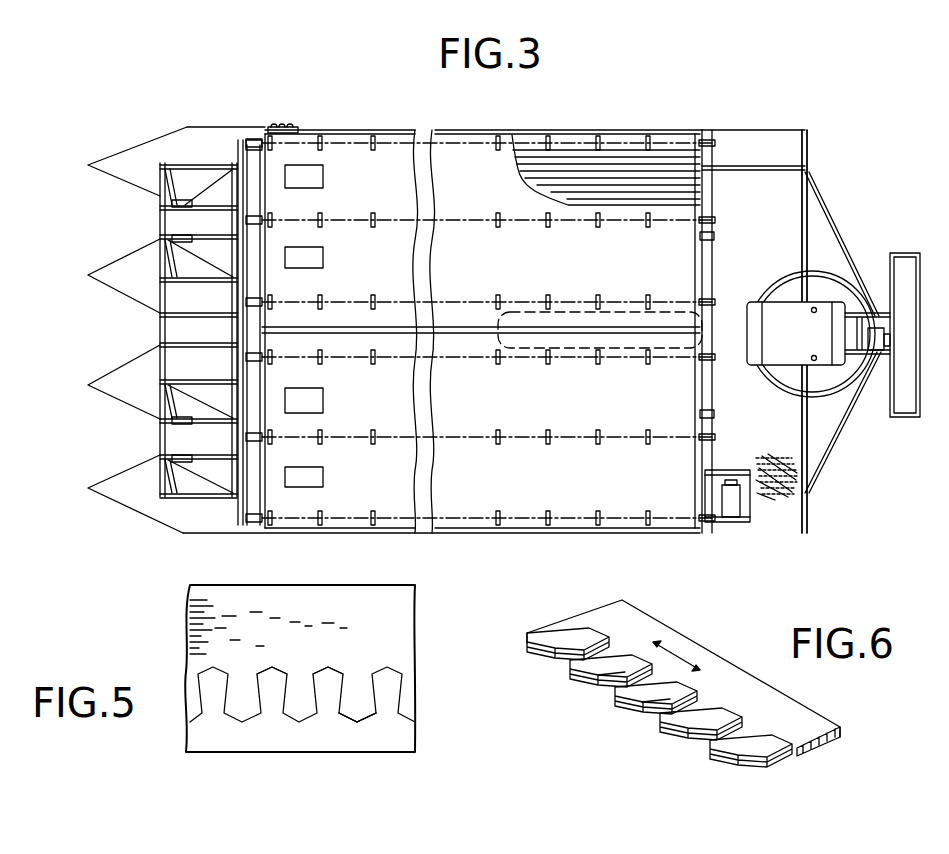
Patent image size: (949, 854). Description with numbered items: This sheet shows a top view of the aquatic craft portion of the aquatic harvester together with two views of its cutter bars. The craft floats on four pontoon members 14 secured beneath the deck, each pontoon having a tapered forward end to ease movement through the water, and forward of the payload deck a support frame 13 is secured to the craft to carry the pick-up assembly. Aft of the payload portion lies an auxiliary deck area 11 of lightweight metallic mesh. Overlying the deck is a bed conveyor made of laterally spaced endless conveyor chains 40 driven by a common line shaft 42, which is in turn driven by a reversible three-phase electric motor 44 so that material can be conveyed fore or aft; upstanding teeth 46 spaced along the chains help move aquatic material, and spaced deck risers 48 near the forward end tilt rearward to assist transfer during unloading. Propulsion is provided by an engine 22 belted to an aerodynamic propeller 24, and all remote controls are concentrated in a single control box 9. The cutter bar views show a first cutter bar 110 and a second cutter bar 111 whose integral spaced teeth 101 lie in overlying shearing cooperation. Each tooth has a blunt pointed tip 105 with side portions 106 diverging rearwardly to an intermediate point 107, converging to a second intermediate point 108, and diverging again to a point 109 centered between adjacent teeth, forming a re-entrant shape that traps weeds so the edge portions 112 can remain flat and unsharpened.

In FIG. 3, the control box 9 is at (297, 128).
In FIG. 3, the auxiliary deck area 11 is at (787, 483).
In FIG. 3, the support frame 13 is at (177, 237).
In FIG. 3, the pontoon members 14 is at (133, 177).
In FIG. 3, the engine 22 is at (800, 347).
In FIG. 3, the aerodynamic propeller 24 is at (892, 268).
In FIG. 3, the endless conveyor chains 40 is at (470, 143).
In FIG. 3, the line shaft 42 is at (713, 257).
In FIG. 3, the electric motor 44 is at (738, 494).
In FIG. 3, the upstanding teeth 46 is at (598, 225).
In FIG. 3, the deck risers 48 is at (317, 253).
In FIG. 5, the teeth 101 is at (218, 680).
In FIG. 6, the teeth 101 is at (542, 643).
In FIG. 5, the blunt pointed tip 105 is at (325, 667).
In FIG. 5, the side portions 106 is at (268, 677).
In FIG. 5, the intermediate point 107 is at (342, 677).
In FIG. 5, the second intermediate point 108 is at (342, 717).
In FIG. 5, the point 109 is at (355, 720).
In FIG. 5, the first cutter bar 110 is at (268, 742).
In FIG. 6, the first cutter bar 110 is at (718, 663).
In FIG. 5, the second cutter bar 111 is at (202, 602).
In FIG. 6, the second cutter bar 111 is at (842, 742).
In FIG. 6, the edge portions 112 is at (594, 689).